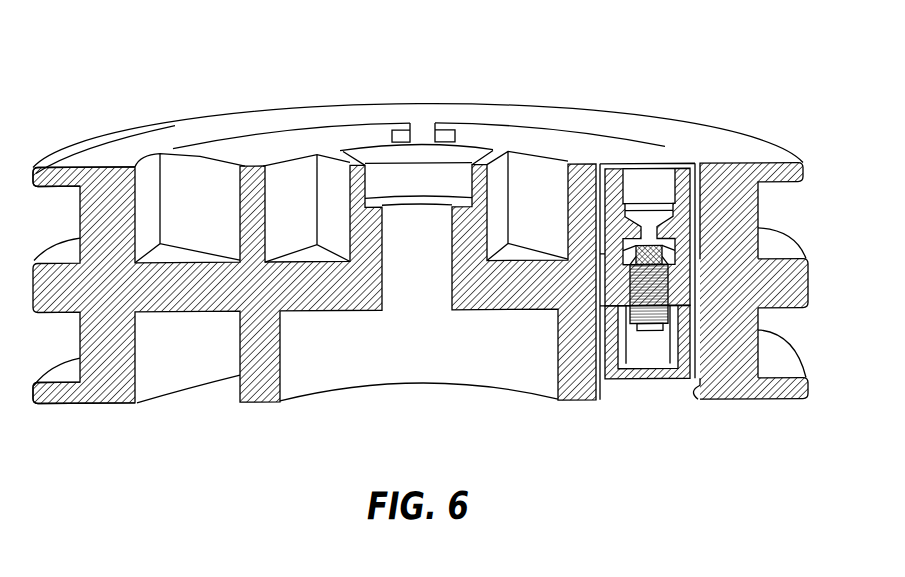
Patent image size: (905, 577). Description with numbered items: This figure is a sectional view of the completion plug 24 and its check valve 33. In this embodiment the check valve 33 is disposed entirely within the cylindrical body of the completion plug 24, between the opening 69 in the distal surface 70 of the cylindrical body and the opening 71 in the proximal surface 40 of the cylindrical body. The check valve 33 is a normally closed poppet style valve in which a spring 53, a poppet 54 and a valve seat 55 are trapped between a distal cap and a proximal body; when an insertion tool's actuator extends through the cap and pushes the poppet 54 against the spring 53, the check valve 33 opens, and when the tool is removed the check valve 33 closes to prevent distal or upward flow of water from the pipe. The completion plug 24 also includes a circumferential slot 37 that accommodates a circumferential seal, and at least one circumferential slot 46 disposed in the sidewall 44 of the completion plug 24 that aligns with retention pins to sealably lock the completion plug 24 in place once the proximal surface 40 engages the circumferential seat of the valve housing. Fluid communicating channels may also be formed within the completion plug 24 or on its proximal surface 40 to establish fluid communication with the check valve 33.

The completion plug 24 is at (170, 90).
The distal surface 70 is at (235, 119).
The check valve 33 is at (668, 162).
The opening 69 is at (696, 164).
The circumferential slot 46 is at (760, 214).
The poppet 54 is at (695, 248).
The sidewall 44 is at (808, 283).
The circumferential slot 37 is at (760, 333).
The opening 71 is at (690, 399).
The spring 53 is at (645, 321).
The valve seat 55 is at (600, 265).
The proximal surface 40 is at (103, 401).